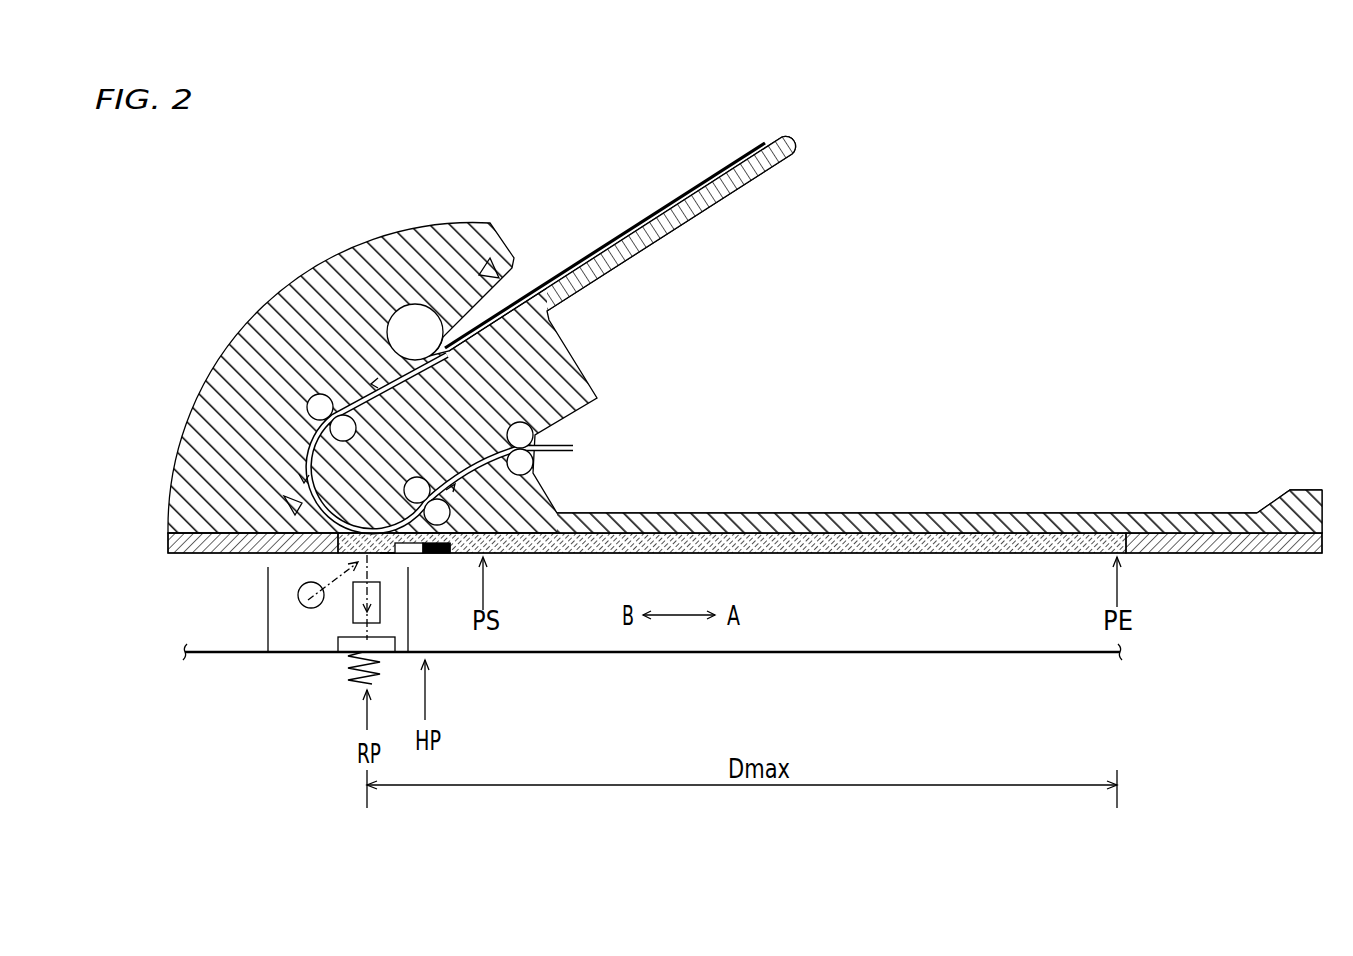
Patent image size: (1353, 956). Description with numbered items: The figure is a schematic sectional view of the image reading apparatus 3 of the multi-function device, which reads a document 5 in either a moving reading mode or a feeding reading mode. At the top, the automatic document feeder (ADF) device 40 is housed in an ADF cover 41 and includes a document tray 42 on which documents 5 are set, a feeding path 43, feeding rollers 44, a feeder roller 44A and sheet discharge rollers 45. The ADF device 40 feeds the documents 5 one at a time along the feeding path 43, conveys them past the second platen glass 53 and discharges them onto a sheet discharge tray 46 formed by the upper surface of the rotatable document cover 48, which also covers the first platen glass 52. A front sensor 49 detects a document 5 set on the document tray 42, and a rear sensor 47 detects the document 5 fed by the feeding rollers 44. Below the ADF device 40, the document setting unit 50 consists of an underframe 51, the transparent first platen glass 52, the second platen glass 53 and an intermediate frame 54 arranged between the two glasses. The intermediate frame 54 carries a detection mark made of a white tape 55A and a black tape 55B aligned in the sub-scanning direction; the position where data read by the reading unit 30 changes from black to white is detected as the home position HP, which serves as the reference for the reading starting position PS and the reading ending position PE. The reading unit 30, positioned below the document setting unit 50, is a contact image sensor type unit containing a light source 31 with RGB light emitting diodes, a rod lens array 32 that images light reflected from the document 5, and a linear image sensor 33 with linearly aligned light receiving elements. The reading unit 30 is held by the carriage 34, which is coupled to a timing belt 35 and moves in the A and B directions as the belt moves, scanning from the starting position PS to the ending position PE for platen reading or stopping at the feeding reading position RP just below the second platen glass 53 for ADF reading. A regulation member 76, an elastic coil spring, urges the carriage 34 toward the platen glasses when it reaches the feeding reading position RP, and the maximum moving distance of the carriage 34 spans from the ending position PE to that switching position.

The image reading apparatus 3 is at (895, 284).
The document 5 is at (667, 203).
The reading unit 30 is at (307, 657).
The light source 31 is at (297, 600).
The rod lens array 32 is at (353, 612).
The linear image sensor 33 is at (387, 652).
The carriage 34 is at (277, 655).
The timing belt 35 is at (948, 655).
The automatic document feeder (ADF) device 40 is at (205, 323).
The ADF cover 41 is at (330, 233).
The document tray 42 is at (718, 205).
The feeding path 43 is at (307, 460).
The feeding rollers 44 is at (320, 394).
The feeder roller 44A is at (408, 303).
The sheet discharge rollers 45 is at (528, 463).
The sheet discharge tray 46 is at (896, 513).
The rear sensor 47 is at (285, 503).
The document cover 48 is at (1243, 513).
The front sensor 49 is at (500, 258).
The document setting unit 50 is at (158, 565).
The underframe 51 is at (182, 555).
The first platen glass 52 is at (866, 555).
The second platen glass 53 is at (382, 555).
The intermediate frame 54 is at (452, 548).
The white tape 55A is at (413, 553).
The black tape 55B is at (437, 553).
The regulation member 76 is at (350, 683).